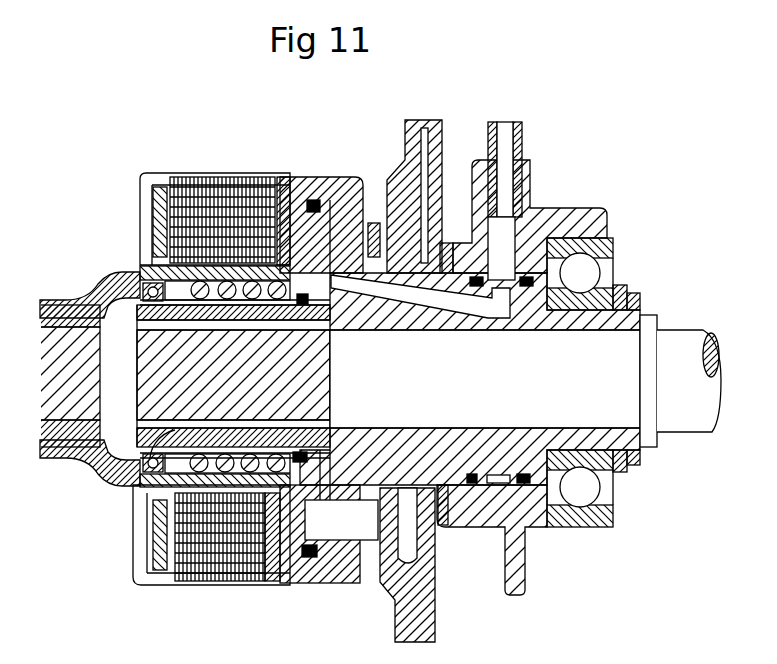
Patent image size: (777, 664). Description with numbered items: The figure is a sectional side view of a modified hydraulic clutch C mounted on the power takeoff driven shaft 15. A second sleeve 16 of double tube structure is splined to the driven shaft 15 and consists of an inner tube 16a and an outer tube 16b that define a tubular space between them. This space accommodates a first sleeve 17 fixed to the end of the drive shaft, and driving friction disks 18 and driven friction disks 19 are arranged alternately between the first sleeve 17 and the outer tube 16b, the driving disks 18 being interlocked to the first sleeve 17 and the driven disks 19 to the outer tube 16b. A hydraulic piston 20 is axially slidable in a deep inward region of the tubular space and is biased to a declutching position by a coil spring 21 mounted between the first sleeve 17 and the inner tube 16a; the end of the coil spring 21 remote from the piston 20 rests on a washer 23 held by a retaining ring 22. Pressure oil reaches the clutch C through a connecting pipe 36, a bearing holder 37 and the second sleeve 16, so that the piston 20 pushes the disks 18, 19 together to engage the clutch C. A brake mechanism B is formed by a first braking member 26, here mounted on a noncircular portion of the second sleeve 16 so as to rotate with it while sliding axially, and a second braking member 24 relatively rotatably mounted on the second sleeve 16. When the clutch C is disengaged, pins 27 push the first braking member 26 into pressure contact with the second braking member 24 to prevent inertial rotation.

The power takeoff driven shaft 15 is at (688, 425).
The second sleeve 16 is at (334, 175).
The inner tube 16a is at (305, 347).
The outer tube 16b is at (287, 177).
The first sleeve 17 is at (95, 290).
The driving friction disks 18 is at (160, 228).
The driven friction disks 19 is at (196, 176).
The hydraulic piston 20 is at (292, 577).
The coil spring 21 is at (300, 408).
The retaining ring 22 is at (115, 445).
The washer 23 is at (162, 505).
The second braking member 24 is at (436, 555).
The first braking member 26 is at (436, 586).
The pins 27 is at (372, 545).
The connecting pipe 36 is at (522, 142).
The bearing holder 37 is at (448, 240).
The brake mechanism B is at (394, 148).
The hydraulic clutch C is at (142, 166).